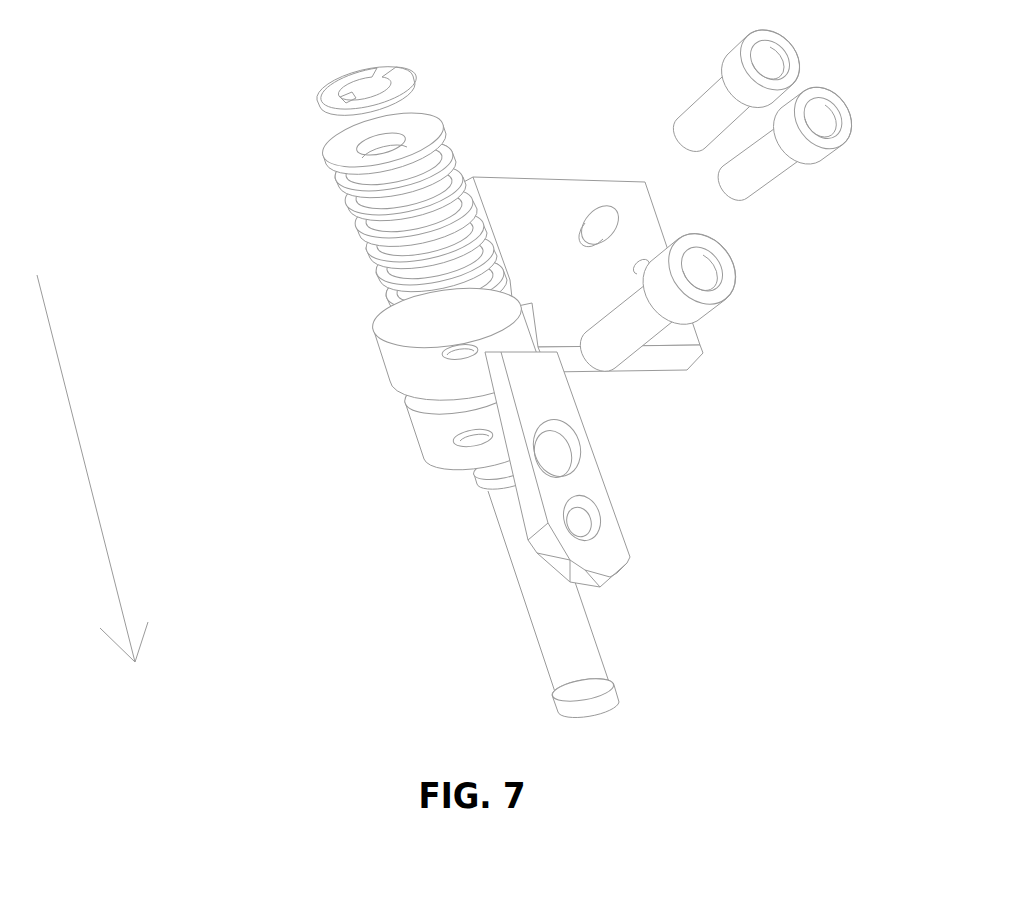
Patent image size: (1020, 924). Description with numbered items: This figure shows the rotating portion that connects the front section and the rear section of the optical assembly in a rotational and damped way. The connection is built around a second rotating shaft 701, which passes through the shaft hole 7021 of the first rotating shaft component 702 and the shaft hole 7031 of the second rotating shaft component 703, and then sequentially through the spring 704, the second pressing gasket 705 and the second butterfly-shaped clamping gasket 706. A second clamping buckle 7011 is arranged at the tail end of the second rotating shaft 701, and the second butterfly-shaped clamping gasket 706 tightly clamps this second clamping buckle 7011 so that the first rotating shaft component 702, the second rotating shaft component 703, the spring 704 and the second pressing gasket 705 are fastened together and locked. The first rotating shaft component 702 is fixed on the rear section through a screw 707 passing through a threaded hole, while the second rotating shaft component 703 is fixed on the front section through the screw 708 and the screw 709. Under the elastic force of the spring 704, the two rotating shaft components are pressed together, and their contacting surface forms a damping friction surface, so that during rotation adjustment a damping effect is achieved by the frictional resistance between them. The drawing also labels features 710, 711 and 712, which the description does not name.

The second rotating shaft 701 is at (537, 598).
The second clamping buckle 7011 is at (490, 483).
The first rotating shaft component 702 is at (433, 403).
The shaft hole 7021 is at (475, 438).
The second rotating shaft component 703 is at (403, 335).
The shaft hole 7031 is at (465, 357).
The spring 704 is at (367, 250).
The second pressing gasket 705 is at (328, 160).
The second butterfly-shaped clamping gasket 706 is at (320, 105).
The screw 707 is at (709, 314).
The screw 708 is at (760, 80).
The screw 709 is at (827, 147).
The mounting plate 710 is at (557, 452).
The through hole 711 is at (592, 223).
The washer 712 is at (641, 268).